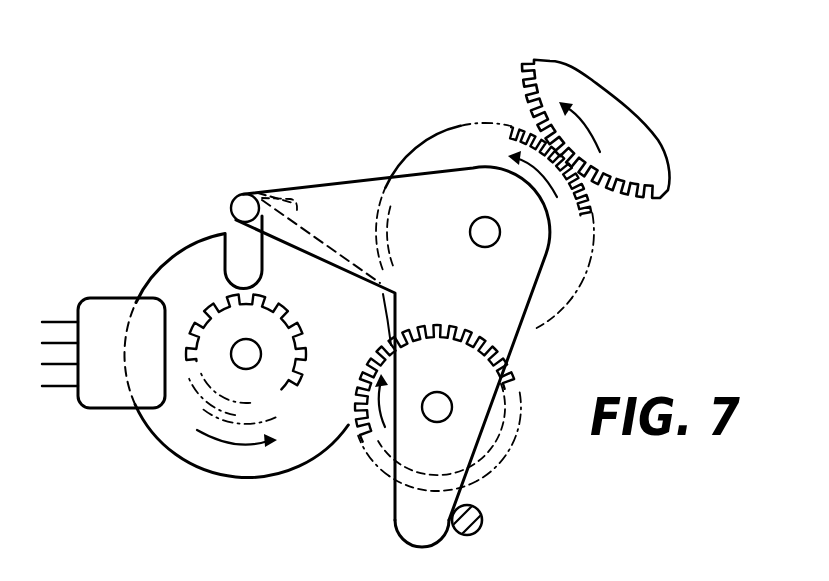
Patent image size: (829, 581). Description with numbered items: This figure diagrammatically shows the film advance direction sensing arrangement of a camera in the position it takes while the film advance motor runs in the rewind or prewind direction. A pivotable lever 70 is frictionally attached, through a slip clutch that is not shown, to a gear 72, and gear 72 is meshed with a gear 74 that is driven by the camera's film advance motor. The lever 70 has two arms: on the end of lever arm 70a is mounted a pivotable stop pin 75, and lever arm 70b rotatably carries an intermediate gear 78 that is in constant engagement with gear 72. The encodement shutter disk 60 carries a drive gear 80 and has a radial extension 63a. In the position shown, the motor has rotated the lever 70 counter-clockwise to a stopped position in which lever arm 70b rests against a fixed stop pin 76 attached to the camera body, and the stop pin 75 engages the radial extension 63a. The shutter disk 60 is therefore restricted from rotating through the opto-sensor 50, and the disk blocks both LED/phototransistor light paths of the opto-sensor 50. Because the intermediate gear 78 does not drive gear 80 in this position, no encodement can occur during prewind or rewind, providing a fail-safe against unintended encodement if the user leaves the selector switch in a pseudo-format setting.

The opto-sensor 50 is at (105, 312).
The encodement shutter disk 60 is at (213, 452).
The radial extension 63a is at (290, 208).
The pivotable lever 70 is at (432, 205).
The lever arm 70a is at (336, 212).
The lever arm 70b is at (408, 513).
The gear 72 is at (518, 133).
The gear 74 is at (528, 106).
The pivotable stop pin 75 is at (232, 207).
The fixed stop pin 76 is at (487, 508).
The intermediate gear 78 is at (368, 364).
The drive gear 80 is at (213, 303).